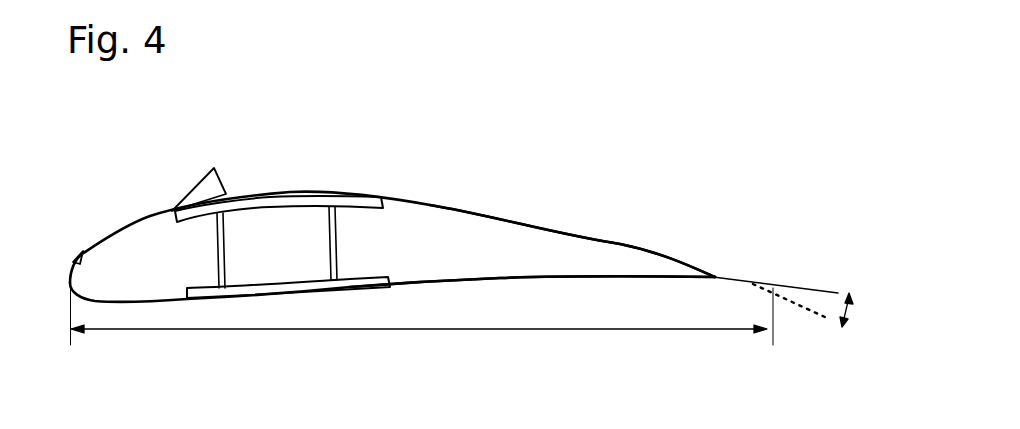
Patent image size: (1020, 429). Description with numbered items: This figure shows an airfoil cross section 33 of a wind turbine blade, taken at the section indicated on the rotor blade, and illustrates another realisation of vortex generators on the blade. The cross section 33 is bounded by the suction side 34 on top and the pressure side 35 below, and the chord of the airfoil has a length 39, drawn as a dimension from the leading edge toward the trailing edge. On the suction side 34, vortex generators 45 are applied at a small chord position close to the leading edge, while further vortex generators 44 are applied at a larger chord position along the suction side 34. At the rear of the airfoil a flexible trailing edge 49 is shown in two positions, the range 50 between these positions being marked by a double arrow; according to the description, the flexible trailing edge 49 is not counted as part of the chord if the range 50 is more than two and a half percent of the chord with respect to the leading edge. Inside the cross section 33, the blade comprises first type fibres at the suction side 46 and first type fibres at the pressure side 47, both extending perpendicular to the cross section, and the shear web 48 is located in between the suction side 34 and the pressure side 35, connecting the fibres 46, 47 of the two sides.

The airfoil cross section 33 is at (433, 220).
The suction side 34 is at (548, 226).
The pressure side 35 is at (497, 280).
The chord length 39 is at (370, 330).
The rear vortex generators 44 is at (202, 167).
The vortex generators at small chord position 45 is at (75, 252).
The first type fibres at the suction side 46 is at (303, 198).
The first type fibres at the pressure side 47 is at (193, 288).
The shear web 48 is at (225, 238).
The flexible trailing edge 49 is at (793, 285).
The range of the flexible trailing edge 50 is at (852, 308).